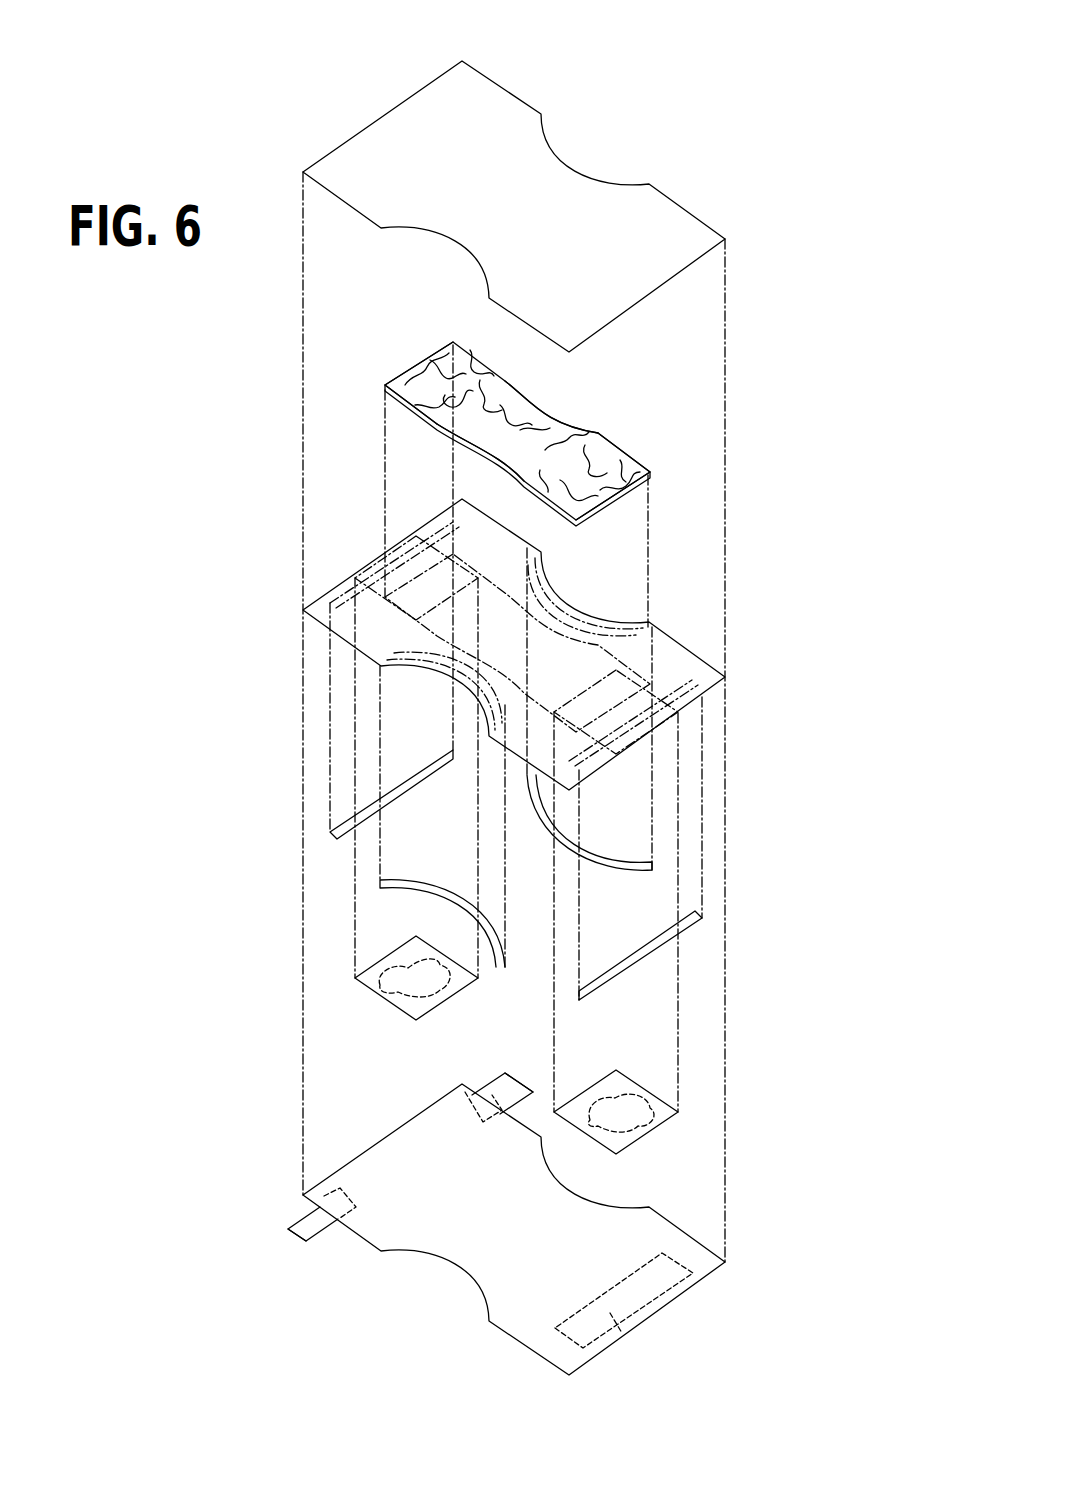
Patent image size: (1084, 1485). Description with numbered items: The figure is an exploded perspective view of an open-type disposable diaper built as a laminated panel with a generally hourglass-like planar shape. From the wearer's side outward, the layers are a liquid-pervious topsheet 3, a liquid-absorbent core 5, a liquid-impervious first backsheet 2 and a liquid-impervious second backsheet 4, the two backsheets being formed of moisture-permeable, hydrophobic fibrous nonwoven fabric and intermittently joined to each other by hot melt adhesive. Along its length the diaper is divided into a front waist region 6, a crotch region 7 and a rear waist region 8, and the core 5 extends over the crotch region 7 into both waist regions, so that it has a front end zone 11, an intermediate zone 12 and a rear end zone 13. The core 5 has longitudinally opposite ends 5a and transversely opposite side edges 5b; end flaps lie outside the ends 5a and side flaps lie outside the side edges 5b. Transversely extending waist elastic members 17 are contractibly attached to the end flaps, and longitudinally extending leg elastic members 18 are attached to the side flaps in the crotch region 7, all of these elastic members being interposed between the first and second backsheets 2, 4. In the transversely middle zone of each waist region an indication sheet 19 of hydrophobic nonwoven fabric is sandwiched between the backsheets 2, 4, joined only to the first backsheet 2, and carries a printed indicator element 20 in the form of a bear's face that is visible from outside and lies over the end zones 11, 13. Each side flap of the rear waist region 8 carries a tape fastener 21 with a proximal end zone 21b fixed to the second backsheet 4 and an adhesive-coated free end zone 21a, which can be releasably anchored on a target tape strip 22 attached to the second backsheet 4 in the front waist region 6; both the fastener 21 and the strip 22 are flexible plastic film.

The first backsheet 2 is at (725, 677).
The topsheet 3 is at (725, 239).
The second backsheet 4 is at (725, 1262).
The liquid-absorbent core 5 is at (535, 440).
The longitudinally opposite ends of the core 5a is at (420, 364).
The transversely opposite side edges of the core 5b is at (550, 418).
The front waist region 6 is at (688, 160).
The crotch region 7 is at (583, 85).
The rear waist region 8 is at (497, 28).
The front end zone 11 is at (592, 492).
The intermediate zone 12 is at (572, 440).
The rear end zone 13 is at (468, 378).
The waist elastic members 17 is at (434, 764).
The leg elastic members 18 is at (447, 890).
The indication sheet 19 is at (415, 1021).
The indicator element 20 is at (407, 983).
The tape fastener 21 is at (508, 1078).
The free end zone 21a is at (510, 1085).
The proximal end zone 21b is at (472, 1093).
The target tape strip 22 is at (628, 1333).